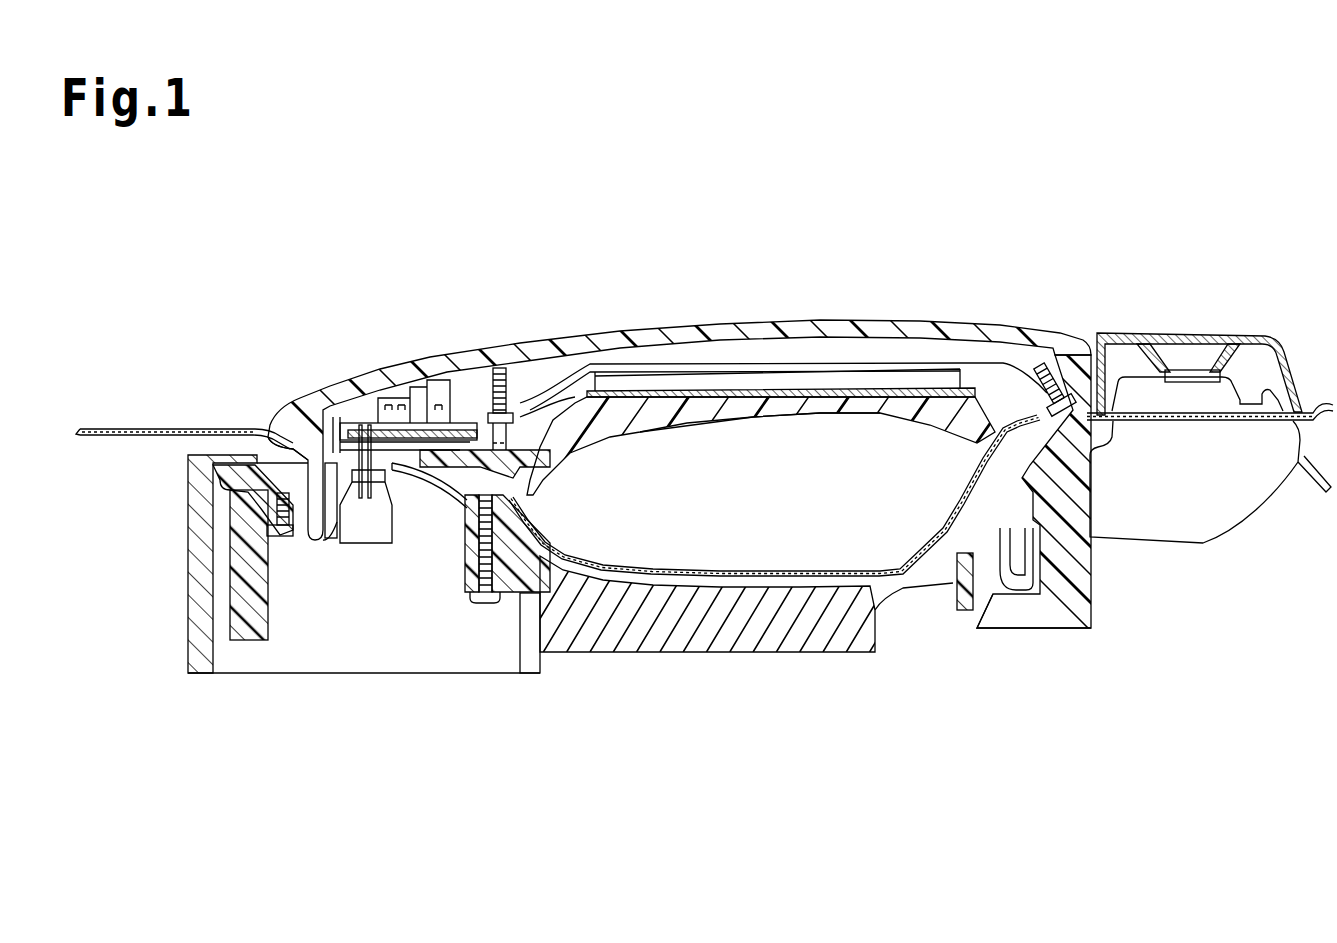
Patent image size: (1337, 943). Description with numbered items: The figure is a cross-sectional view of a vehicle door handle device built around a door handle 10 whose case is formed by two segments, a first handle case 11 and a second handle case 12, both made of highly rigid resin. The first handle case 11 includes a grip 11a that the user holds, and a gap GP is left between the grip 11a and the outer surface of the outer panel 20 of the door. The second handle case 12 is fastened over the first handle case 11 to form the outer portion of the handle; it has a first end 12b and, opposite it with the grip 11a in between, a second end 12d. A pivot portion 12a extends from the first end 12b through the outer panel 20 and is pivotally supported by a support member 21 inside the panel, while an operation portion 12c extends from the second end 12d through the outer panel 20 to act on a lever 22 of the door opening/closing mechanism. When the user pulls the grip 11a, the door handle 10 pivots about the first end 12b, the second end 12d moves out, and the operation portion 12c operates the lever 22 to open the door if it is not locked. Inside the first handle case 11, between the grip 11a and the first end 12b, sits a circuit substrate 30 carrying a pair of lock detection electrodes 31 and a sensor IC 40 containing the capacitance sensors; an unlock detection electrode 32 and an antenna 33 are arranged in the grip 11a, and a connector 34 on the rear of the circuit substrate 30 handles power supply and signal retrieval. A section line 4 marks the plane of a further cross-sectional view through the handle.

The door handle 10 is at (702, 252).
The second handle case 12 is at (608, 334).
The pivot portion 12a is at (204, 481).
The first end 12b is at (294, 386).
The operation portion 12c is at (973, 659).
The second end 12d is at (1084, 303).
The first handle case 11 is at (627, 437).
The grip 11a is at (806, 434).
The gap GP is at (758, 510).
The outer panel 20 is at (148, 430).
The support member 21 is at (188, 575).
The lever 22 is at (1003, 545).
The circuit substrate 30 is at (434, 477).
The lock detection electrodes 31 is at (460, 378).
The unlock detection electrode 32 is at (925, 396).
The antenna 33 is at (846, 380).
The connector 34 is at (345, 570).
The sensor IC 40 is at (405, 473).
The section line IV-IV 4 is at (415, 332).